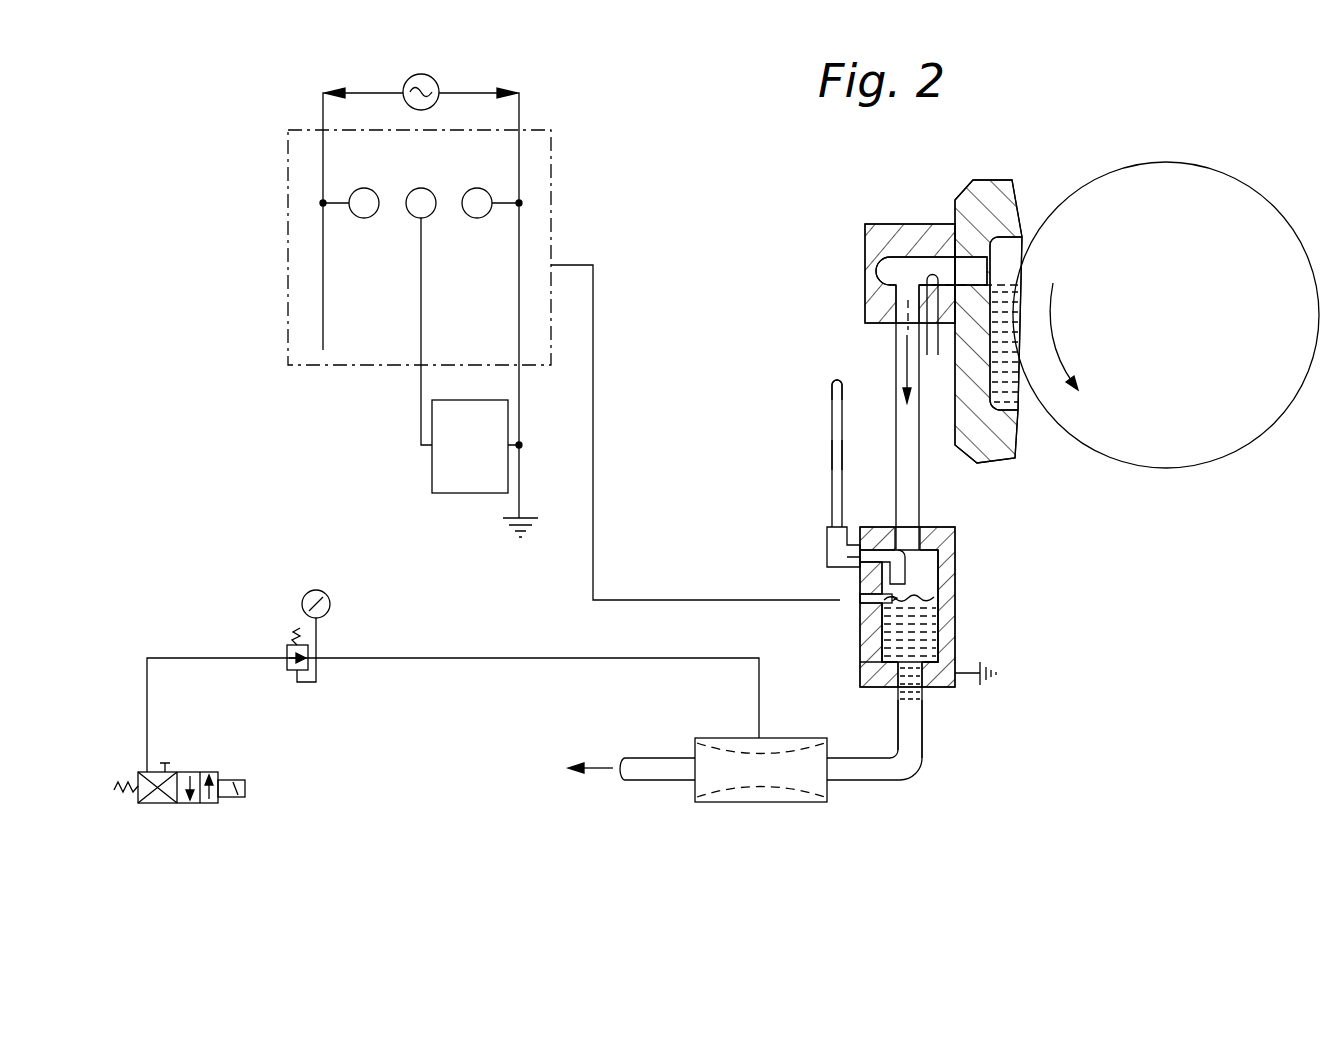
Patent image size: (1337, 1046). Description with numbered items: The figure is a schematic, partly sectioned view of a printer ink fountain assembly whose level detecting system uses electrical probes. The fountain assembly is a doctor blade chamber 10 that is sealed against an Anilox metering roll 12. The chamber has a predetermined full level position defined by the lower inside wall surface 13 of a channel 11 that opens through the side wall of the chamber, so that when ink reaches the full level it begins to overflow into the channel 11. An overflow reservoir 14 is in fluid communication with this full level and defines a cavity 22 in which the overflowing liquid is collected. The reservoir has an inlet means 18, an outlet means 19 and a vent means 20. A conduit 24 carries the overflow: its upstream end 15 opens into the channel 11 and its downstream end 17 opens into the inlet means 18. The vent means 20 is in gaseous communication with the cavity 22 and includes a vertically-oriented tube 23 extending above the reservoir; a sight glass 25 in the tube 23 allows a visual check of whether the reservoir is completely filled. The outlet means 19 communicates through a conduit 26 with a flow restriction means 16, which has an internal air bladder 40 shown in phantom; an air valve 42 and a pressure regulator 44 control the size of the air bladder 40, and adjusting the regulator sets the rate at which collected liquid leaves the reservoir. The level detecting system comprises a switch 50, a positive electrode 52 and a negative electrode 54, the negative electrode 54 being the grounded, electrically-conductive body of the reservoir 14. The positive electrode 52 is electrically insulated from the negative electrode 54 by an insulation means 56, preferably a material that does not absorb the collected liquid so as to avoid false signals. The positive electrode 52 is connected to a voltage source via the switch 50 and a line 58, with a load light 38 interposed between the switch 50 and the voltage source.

The doctor blade chamber 10 is at (1000, 180).
The channel 11 is at (910, 263).
The Anilox metering roll 12 is at (1268, 197).
The lower inside wall surface 13 is at (932, 330).
The overflow reservoir 14 is at (972, 561).
The upstream end 15 is at (895, 340).
The flow restriction means 16 is at (830, 797).
The downstream end 17 is at (921, 503).
The inlet means 18 is at (907, 528).
The outlet means 19 is at (935, 685).
The vent means 20 is at (808, 546).
The cavity 22 is at (927, 566).
The tube 23 is at (832, 445).
The conduit 24 is at (893, 437).
The sight glass 25 is at (832, 408).
The conduit 26 is at (927, 772).
The load light 38 is at (462, 495).
The air bladder 40 is at (760, 790).
The air valve 42 is at (210, 772).
The pressure regulator 44 is at (287, 668).
The switch 50 is at (840, 614).
The positive electrode 52 is at (928, 600).
The negative electrode 54 is at (962, 647).
The insulation means 56 is at (862, 640).
The line 58 is at (594, 548).